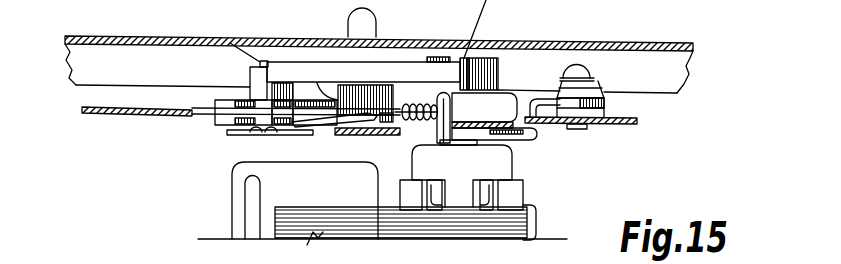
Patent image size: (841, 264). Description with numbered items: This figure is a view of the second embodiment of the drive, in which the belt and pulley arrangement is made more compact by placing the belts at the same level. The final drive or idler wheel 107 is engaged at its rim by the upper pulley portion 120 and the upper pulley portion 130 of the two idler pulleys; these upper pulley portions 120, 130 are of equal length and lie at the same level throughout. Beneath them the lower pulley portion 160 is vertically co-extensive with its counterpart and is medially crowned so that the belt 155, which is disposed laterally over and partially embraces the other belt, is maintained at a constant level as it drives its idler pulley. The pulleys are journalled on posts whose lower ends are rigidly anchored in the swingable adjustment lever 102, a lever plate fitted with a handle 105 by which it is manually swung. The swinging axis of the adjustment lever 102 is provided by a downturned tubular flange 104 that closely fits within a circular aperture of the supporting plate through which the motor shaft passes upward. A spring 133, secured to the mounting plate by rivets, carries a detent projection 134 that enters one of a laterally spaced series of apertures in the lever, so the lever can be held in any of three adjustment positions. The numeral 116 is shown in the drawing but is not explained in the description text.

The final drive or idler wheel 107 is at (298, 62).
The upper pulley portion 120 is at (438, 57).
The upper pulley portion 130 is at (480, 58).
The belt 155 is at (478, 100).
The lower pulley portion 160 is at (531, 136).
The swingable adjustment lever 102 is at (477, 132).
The downturned tubular flange 104 is at (457, 146).
The handle 105 is at (377, 120).
The detent projection 134 is at (363, 130).
The spring 133 is at (256, 131).
The base 116 is at (66, 263).